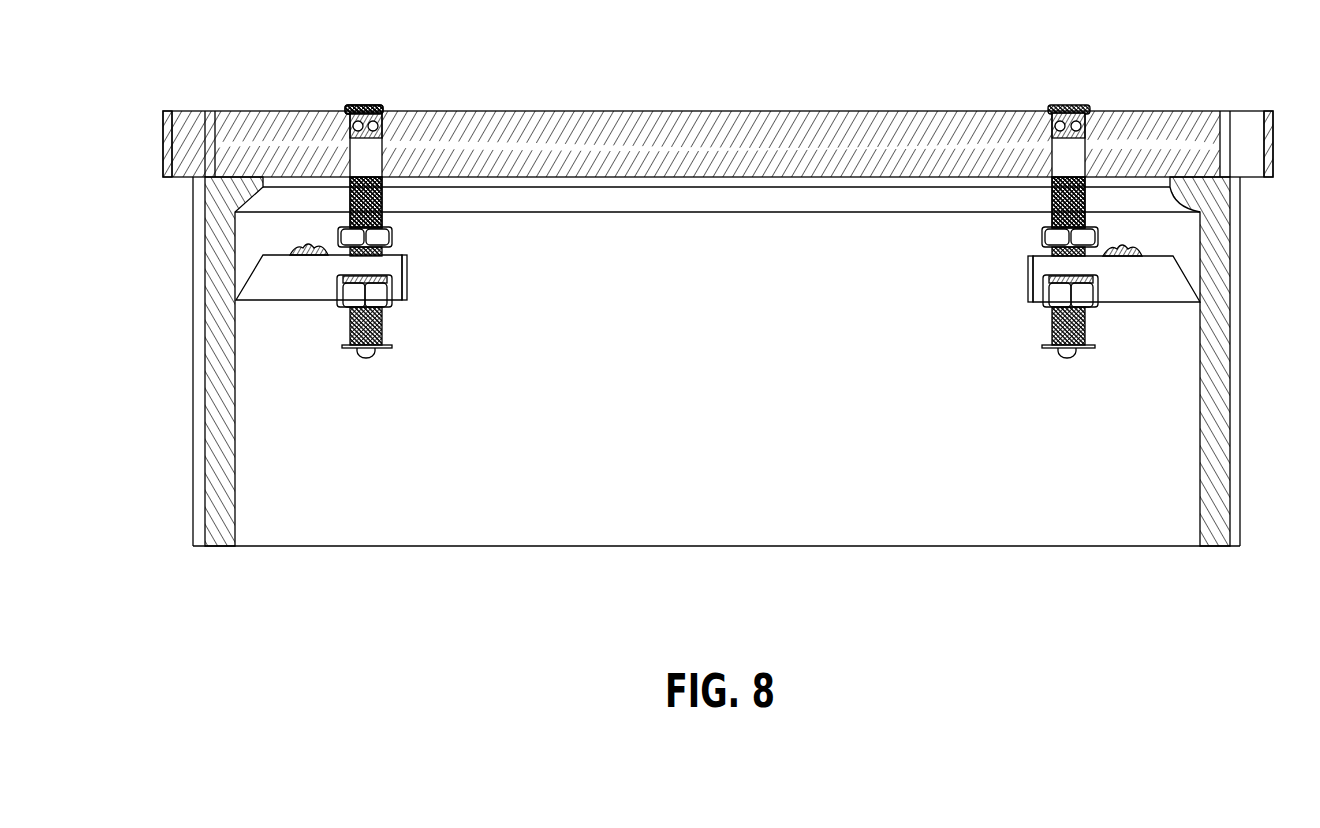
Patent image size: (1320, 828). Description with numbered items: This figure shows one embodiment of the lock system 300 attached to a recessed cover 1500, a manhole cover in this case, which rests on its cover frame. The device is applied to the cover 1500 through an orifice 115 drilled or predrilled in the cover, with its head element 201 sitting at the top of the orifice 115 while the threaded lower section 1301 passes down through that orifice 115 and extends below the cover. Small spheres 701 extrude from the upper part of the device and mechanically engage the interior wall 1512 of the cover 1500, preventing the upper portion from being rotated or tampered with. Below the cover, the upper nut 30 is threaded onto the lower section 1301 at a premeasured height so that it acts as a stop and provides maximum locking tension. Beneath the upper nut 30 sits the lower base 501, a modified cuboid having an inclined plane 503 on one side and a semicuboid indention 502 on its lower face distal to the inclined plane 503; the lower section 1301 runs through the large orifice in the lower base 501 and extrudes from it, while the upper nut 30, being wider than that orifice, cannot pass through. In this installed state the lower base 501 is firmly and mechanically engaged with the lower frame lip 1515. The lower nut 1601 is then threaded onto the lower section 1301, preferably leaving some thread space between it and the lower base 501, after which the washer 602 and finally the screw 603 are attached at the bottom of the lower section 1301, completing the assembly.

The recessed cover 1500 is at (794, 112).
The interior wall 1512 is at (393, 133).
The lower frame lip 1515 is at (215, 205).
The inclined plane 503 is at (1200, 258).
The lower base 501 is at (310, 302).
The semicuboid indention 502 is at (1029, 296).
The lock system 300 is at (407, 276).
The orifice 115 is at (378, 108).
The bolt head 201 is at (362, 106).
The small spheres 701 is at (353, 128).
The lower section 1301 is at (384, 205).
The upper nut 30 is at (393, 240).
The lower nut 1601 is at (390, 302).
The washer 602 is at (1045, 346).
The screw 603 is at (1065, 360).